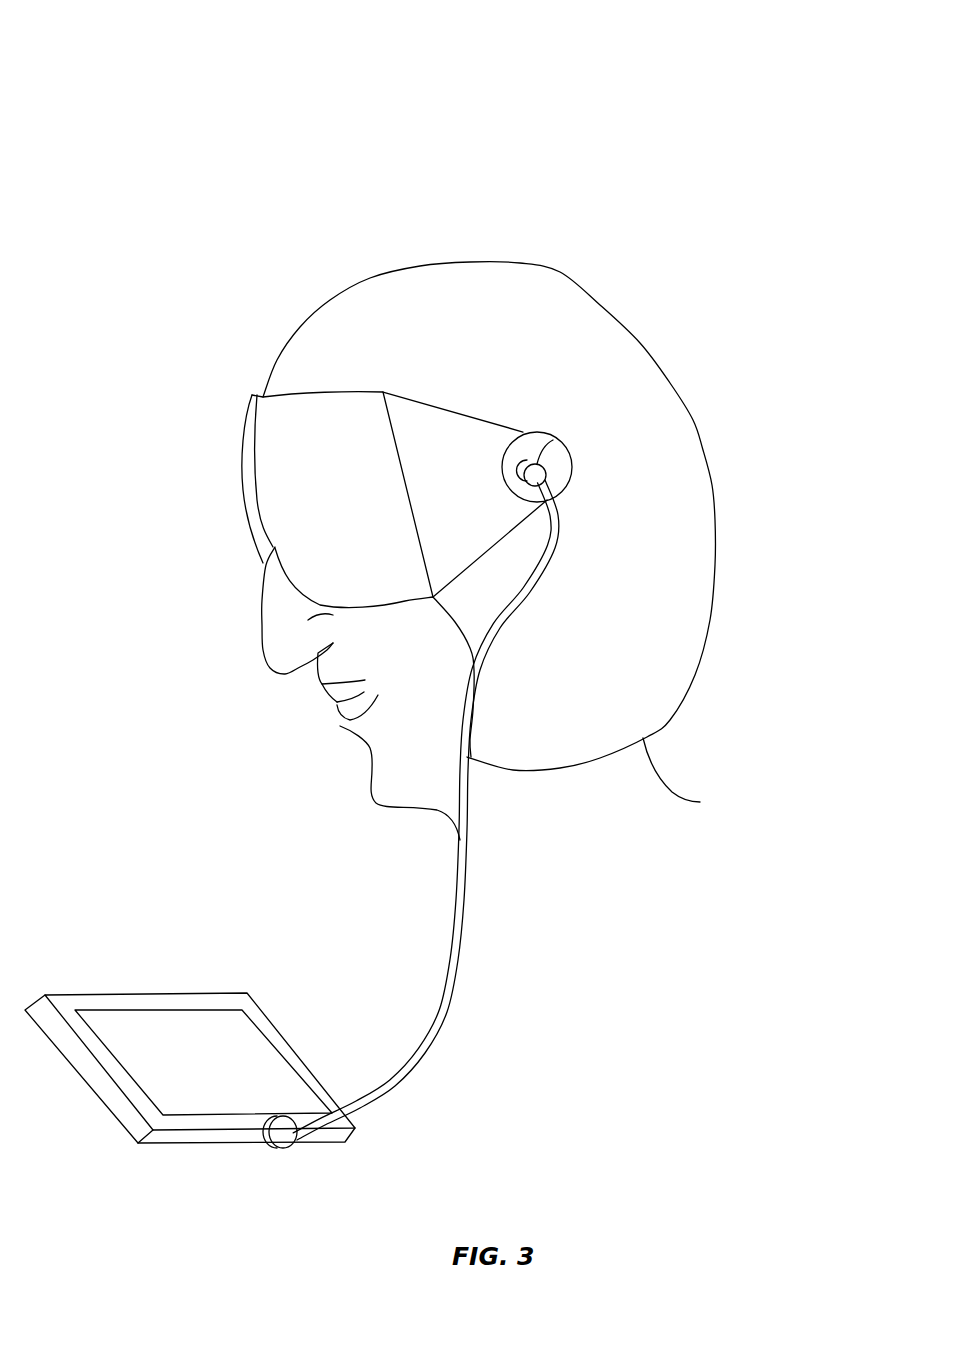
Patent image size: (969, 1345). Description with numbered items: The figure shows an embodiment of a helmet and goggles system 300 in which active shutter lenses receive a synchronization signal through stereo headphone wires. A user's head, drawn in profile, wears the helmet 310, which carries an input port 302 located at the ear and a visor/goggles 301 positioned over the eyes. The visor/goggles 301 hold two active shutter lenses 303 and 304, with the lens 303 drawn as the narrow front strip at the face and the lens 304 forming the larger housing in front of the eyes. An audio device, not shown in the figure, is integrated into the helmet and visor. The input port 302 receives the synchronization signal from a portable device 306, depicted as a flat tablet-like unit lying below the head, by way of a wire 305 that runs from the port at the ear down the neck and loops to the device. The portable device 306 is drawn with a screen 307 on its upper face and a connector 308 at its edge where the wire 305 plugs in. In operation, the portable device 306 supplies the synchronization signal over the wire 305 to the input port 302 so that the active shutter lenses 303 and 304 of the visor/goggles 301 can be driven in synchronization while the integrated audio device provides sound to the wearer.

The head-mounted display system 300 is at (301, 90).
The visor/goggles 301 is at (497, 543).
The input port 302 is at (550, 437).
The active shutter lens 303 is at (257, 495).
The active shutter lens 304 is at (346, 503).
The wire 305 is at (448, 975).
The portable device 306 is at (160, 1000).
The display screen 307 is at (221, 1068).
The connector 308 is at (285, 1150).
The helmet 310 is at (282, 370).